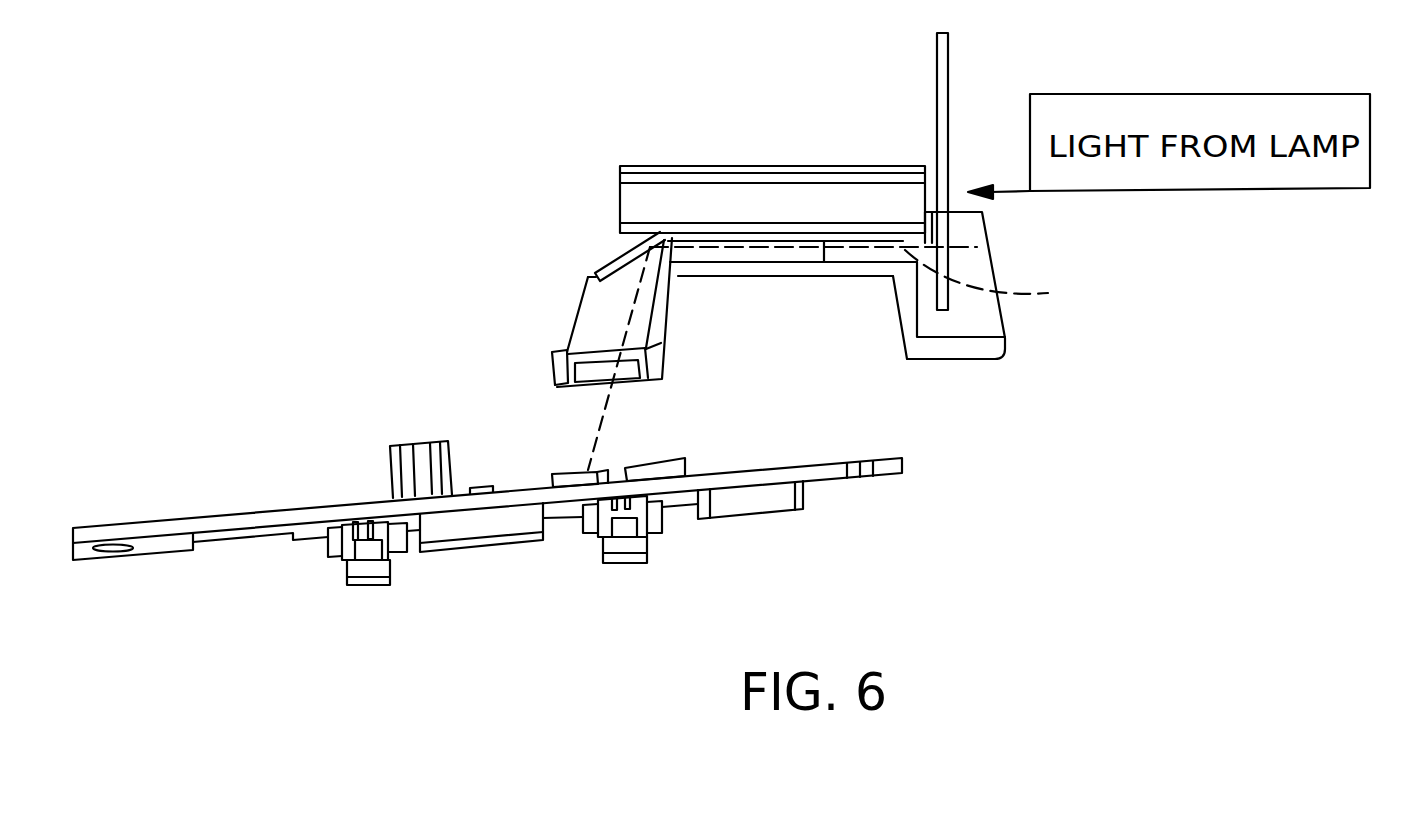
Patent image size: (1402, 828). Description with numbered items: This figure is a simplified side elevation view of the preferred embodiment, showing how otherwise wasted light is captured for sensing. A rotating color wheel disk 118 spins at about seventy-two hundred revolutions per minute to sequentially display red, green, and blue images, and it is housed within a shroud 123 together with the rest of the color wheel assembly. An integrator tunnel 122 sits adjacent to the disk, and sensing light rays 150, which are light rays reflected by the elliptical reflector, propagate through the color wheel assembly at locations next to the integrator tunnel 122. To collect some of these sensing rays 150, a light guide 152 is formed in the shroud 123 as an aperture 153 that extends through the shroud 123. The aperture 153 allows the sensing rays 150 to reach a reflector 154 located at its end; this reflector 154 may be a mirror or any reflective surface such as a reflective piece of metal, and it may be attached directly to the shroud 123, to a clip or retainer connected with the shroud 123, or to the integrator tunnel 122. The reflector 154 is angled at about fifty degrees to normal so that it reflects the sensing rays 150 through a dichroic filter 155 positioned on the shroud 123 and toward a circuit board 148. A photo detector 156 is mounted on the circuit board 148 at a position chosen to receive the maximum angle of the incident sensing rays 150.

The color wheel disk 118 is at (937, 78).
The integrator tunnel 122 is at (782, 165).
The shroud 123 is at (935, 348).
The circuit board 148 is at (198, 518).
The sensing light rays 150 is at (622, 326).
The light guide 152 is at (812, 275).
The aperture 153 is at (1008, 281).
The reflector 154 is at (613, 255).
The dichroic filter 155 is at (593, 358).
The photo detector 156 is at (565, 473).